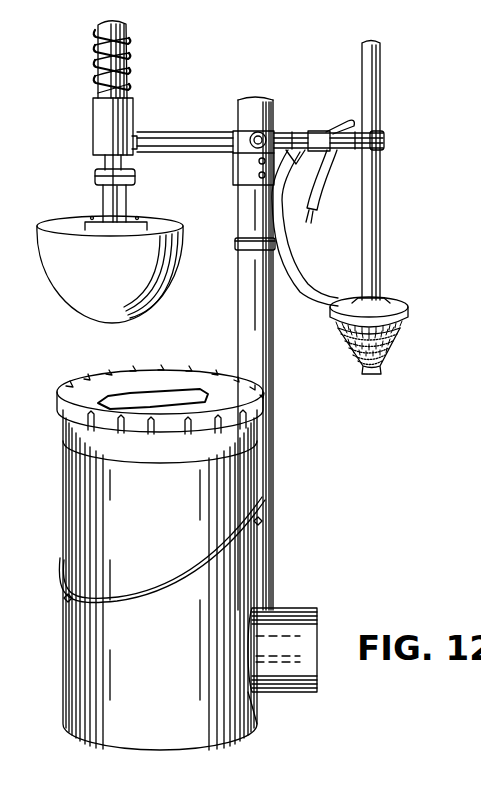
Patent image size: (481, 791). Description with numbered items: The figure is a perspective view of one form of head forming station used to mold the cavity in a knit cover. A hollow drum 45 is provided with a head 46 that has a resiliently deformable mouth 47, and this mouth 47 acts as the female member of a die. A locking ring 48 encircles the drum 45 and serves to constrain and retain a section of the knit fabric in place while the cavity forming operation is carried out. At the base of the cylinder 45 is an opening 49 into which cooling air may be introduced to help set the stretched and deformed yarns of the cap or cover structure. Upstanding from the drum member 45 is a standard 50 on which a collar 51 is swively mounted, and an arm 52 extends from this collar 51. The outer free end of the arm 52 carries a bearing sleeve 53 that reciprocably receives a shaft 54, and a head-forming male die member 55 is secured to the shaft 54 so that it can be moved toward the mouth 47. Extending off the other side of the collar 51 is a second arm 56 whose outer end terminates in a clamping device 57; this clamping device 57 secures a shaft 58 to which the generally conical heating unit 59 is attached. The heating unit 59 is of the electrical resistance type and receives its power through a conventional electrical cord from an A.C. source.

The hollow drum 45 is at (107, 498).
The head 46 is at (57, 397).
The resiliently deformable mouth 47 is at (162, 392).
The locking ring 48 is at (163, 594).
The opening 49 is at (296, 665).
The standard 50 is at (255, 357).
The collar 51 is at (240, 138).
The arm 52 is at (172, 140).
The bearing sleeve 53 is at (105, 128).
The shaft 54 is at (112, 206).
The head-forming male die member 55 is at (122, 275).
The arm 56 is at (327, 132).
The clamping device 57 is at (384, 143).
The shaft 58 is at (370, 253).
The heating unit 59 is at (393, 347).